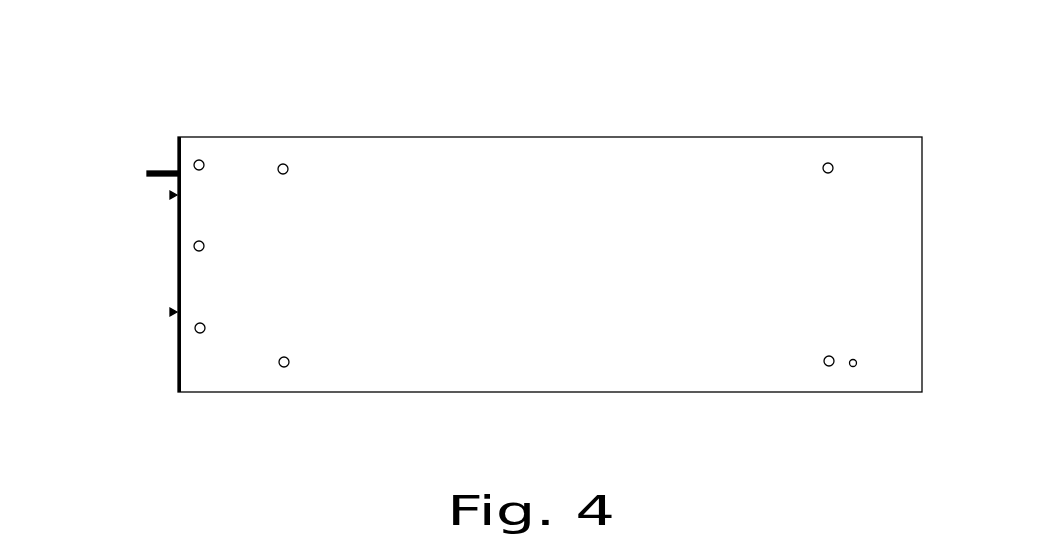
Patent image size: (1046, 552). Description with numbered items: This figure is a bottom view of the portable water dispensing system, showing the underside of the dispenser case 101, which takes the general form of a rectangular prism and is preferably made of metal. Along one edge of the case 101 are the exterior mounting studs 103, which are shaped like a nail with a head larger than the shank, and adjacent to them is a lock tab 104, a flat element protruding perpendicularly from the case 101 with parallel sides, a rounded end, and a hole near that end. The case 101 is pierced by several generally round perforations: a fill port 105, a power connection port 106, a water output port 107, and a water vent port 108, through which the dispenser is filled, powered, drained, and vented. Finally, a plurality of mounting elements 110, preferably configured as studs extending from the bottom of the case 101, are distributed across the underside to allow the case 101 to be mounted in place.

The dispenser case 101 is at (599, 137).
The mounting studs 103 is at (172, 195).
The lock tabs 104 is at (152, 170).
The fill port 105 is at (196, 160).
The power connection port 106 is at (201, 241).
The water output port 107 is at (197, 332).
The water vent port 108 is at (853, 367).
The mounting elements 110 is at (824, 171).